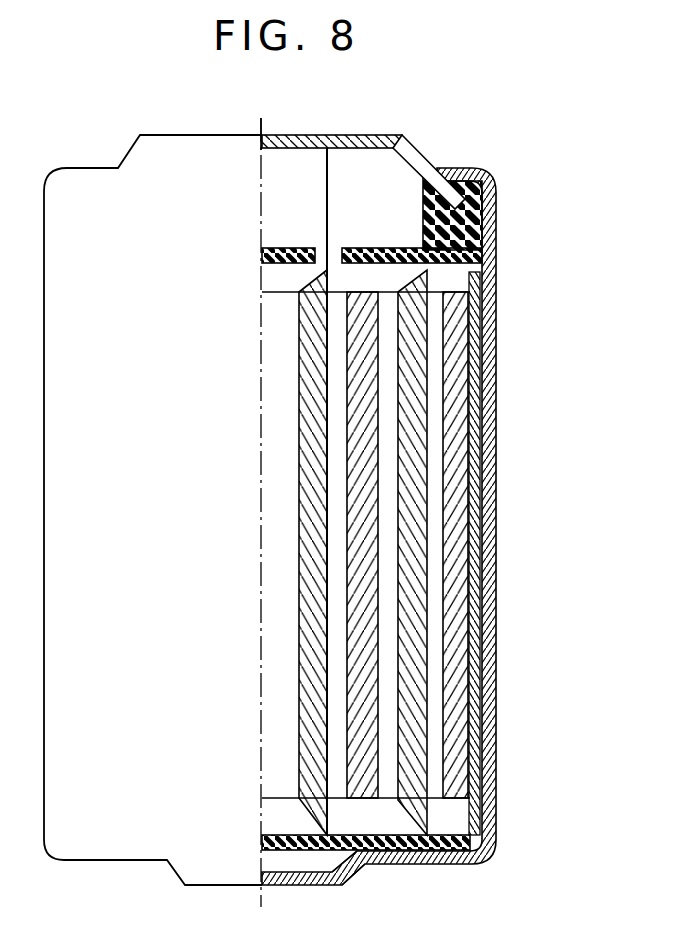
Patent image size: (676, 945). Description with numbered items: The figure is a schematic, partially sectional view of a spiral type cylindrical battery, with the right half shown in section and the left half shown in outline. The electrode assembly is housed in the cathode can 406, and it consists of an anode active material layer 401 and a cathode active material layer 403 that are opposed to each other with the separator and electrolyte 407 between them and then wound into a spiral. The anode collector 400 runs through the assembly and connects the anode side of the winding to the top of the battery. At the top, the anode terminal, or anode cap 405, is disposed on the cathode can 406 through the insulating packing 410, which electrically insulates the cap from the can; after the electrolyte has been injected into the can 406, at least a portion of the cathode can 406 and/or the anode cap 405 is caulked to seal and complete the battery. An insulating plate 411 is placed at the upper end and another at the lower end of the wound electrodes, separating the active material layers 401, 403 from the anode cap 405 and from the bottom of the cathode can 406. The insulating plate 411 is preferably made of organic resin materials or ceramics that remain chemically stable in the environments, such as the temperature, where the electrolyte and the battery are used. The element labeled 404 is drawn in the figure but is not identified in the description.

The anode collector 400 is at (330, 198).
The anode active material layer 401 is at (413, 457).
The cathode active material layer 403 is at (458, 723).
The battery case 404 is at (477, 625).
The anode terminal 405 is at (367, 135).
The cathode can 406 is at (348, 868).
The separator and electrolyte 407 is at (390, 373).
The insulating packing 410 is at (475, 223).
The insulating plate 411 is at (475, 255).